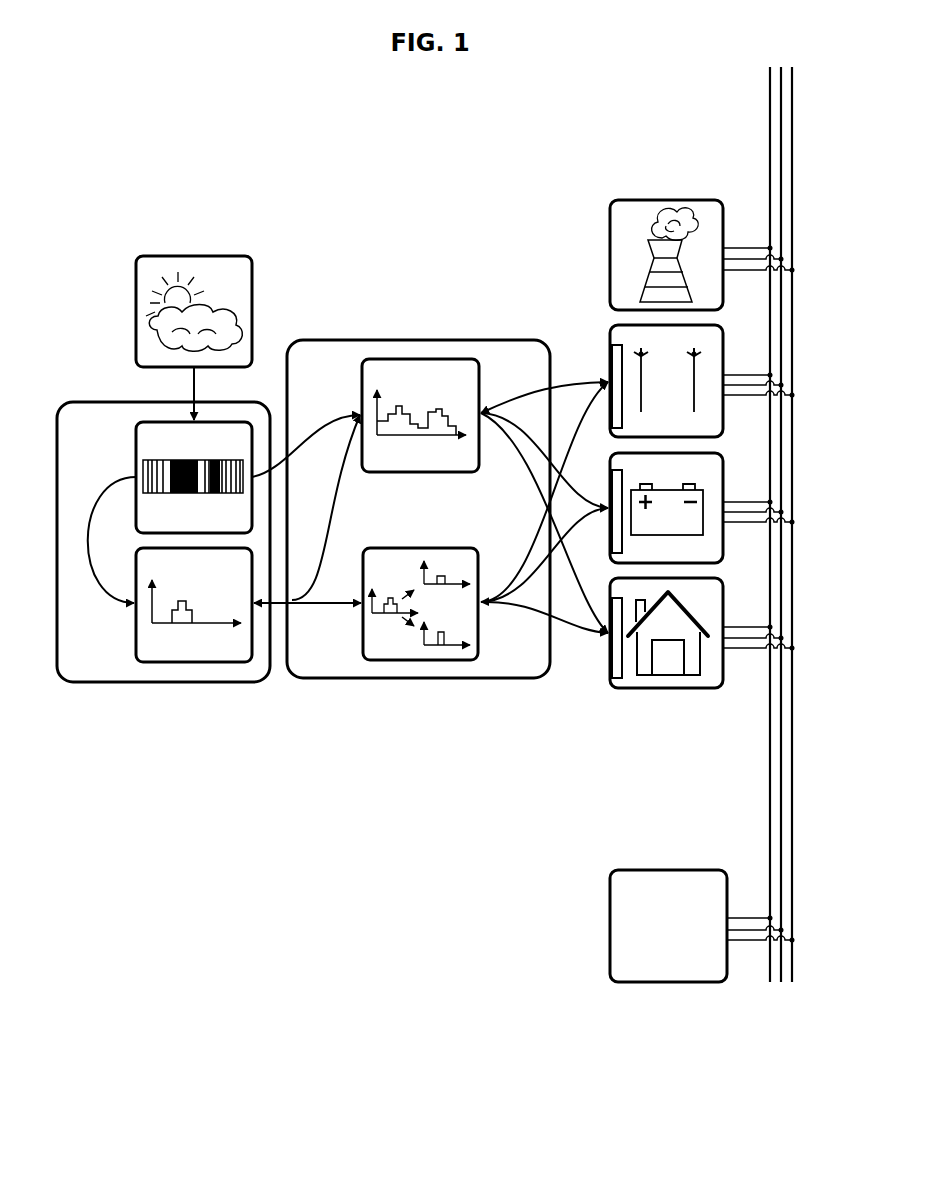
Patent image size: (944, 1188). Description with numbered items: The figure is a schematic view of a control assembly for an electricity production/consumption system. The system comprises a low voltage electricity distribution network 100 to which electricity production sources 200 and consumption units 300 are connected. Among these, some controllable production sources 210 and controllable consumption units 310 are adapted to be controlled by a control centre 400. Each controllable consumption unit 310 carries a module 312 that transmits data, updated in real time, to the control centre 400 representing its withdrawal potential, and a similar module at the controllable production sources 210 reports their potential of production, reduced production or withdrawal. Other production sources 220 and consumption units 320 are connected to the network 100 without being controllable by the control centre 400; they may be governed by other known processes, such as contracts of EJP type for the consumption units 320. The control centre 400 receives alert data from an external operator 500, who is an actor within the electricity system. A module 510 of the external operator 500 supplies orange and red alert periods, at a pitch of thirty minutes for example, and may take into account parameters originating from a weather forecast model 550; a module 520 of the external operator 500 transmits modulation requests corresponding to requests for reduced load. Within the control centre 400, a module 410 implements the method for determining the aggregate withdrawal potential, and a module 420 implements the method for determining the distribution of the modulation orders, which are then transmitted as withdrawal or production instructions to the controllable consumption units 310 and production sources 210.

The low voltage electricity distribution network 100 is at (760, 116).
The electricity production sources 200 is at (669, 389).
The controllable production source 210 is at (717, 545).
The non-controllable production source 220 is at (717, 227).
The consumption units 300 is at (737, 411).
The controllable consumption unit 310 is at (718, 353).
The module 312 is at (616, 368).
The non-controllable consumption unit 320 is at (670, 978).
The control centre 400 is at (418, 483).
The module 410 is at (470, 388).
The module 420 is at (470, 578).
The external operator 500 is at (163, 514).
The module 510 is at (143, 450).
The module 520 is at (143, 578).
The weather forecast model 550 is at (245, 282).